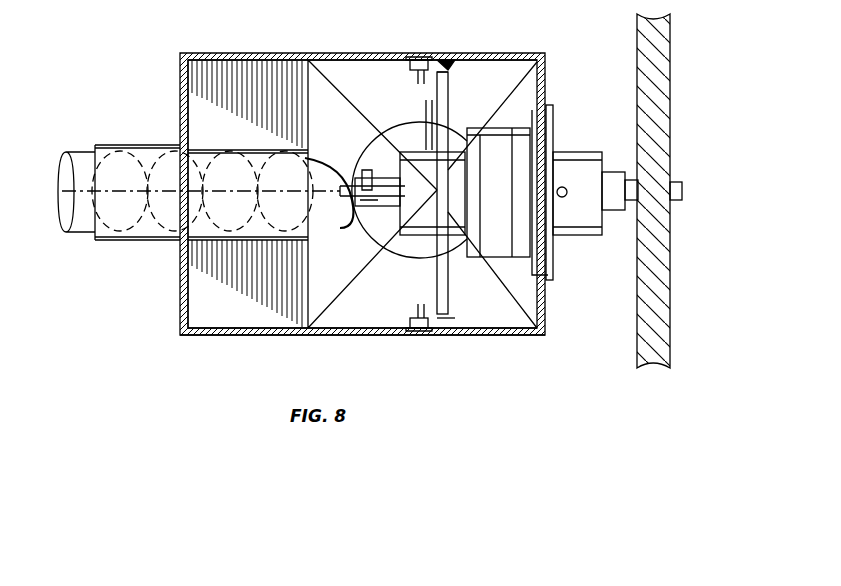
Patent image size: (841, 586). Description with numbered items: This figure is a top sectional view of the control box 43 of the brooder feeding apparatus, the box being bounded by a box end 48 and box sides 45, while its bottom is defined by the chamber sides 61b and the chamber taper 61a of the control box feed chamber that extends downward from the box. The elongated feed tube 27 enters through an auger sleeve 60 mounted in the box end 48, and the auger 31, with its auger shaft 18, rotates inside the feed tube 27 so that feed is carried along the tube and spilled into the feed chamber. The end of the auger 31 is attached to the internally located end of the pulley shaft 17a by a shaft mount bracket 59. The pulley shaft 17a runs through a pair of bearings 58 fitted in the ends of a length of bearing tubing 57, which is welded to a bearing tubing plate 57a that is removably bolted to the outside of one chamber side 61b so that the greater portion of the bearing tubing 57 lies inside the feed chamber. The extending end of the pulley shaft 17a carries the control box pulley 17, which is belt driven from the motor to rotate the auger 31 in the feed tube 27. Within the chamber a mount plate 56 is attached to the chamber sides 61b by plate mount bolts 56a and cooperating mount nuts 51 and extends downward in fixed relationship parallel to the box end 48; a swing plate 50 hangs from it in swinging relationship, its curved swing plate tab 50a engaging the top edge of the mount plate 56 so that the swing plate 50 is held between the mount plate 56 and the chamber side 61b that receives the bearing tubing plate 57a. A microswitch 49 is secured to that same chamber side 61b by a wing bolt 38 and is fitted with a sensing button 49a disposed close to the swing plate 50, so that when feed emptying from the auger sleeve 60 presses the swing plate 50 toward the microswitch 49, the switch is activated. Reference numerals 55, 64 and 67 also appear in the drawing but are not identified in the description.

The control box pulley 17 is at (645, 345).
The pulley shaft 17a is at (676, 200).
The auger shaft 18 is at (345, 182).
The feed tube 27 is at (85, 245).
The auger 31 is at (305, 160).
The wing bolt 38 is at (575, 200).
The control box 43 is at (230, 340).
The box sides 45 is at (262, 53).
The box end 48 is at (180, 305).
The microswitch 49 is at (505, 260).
The sensing button 49a is at (432, 193).
The swing plate 50 is at (448, 270).
The swing plate tab 50a is at (448, 130).
The mount nuts 51 is at (410, 67).
The bolt 55 is at (428, 60).
The mount plate 56 is at (450, 60).
The plate mount bolts 56a is at (418, 53).
The bearing tubing 57 is at (555, 175).
The bearing tubing plate 57a is at (550, 150).
The bearings 58 is at (400, 250).
The shaft mount bracket 59 is at (385, 178).
The auger sleeve 60 is at (165, 243).
The chamber taper 61a is at (495, 88).
The chamber sides 61b is at (523, 53).
The hatched insulation 64 is at (385, 232).
The bracket 67 is at (424, 108).